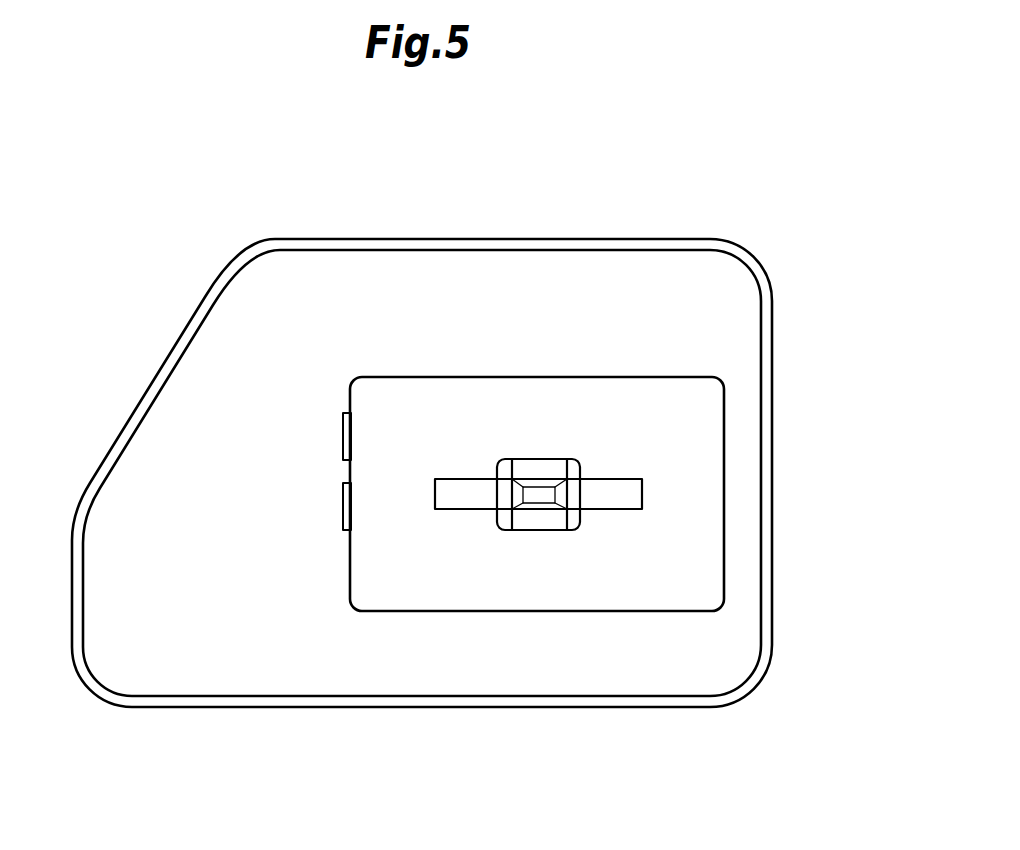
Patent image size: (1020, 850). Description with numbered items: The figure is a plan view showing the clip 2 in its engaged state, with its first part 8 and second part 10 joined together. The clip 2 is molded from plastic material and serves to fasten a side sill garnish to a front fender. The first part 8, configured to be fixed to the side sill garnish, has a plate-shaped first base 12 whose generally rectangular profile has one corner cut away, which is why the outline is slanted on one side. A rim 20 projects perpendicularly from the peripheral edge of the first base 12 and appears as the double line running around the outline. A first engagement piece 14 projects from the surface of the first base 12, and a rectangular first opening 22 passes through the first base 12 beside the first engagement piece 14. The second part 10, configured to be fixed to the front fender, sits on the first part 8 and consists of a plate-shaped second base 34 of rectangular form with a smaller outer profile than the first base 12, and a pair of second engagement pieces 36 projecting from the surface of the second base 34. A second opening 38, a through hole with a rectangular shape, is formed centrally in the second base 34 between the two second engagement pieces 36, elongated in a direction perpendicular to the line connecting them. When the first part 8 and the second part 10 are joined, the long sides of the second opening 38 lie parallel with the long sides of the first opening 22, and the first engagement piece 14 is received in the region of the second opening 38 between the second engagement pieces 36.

The clip 2 is at (625, 183).
The first part 8 is at (712, 238).
The second part 10 is at (656, 612).
The first base 12 is at (368, 270).
The first engagement piece 14 is at (542, 493).
The rim 20 is at (261, 247).
The first opening 22 is at (352, 420).
The second base 34 is at (388, 572).
The second engagement pieces 36 is at (522, 467).
The second opening 38 is at (610, 497).